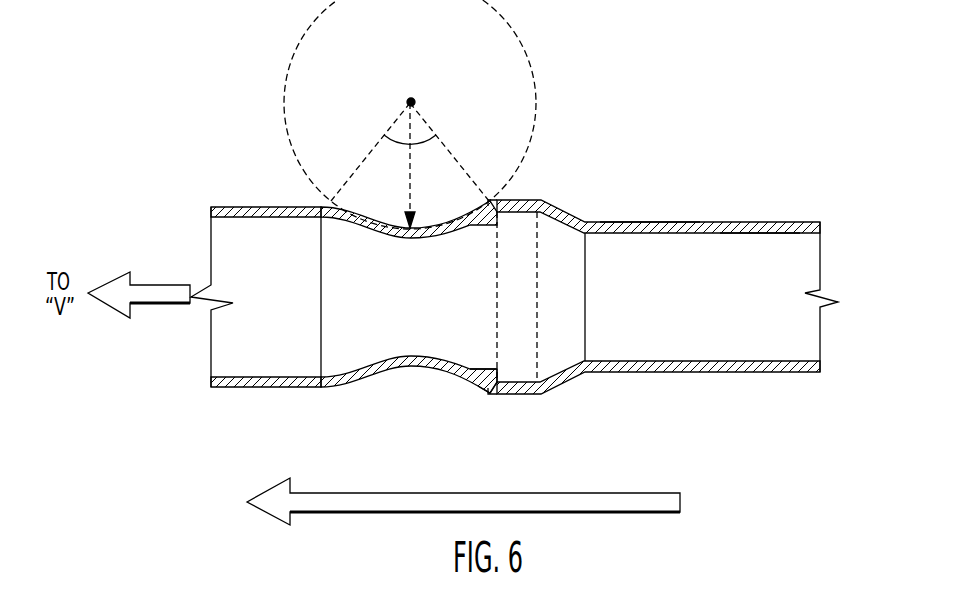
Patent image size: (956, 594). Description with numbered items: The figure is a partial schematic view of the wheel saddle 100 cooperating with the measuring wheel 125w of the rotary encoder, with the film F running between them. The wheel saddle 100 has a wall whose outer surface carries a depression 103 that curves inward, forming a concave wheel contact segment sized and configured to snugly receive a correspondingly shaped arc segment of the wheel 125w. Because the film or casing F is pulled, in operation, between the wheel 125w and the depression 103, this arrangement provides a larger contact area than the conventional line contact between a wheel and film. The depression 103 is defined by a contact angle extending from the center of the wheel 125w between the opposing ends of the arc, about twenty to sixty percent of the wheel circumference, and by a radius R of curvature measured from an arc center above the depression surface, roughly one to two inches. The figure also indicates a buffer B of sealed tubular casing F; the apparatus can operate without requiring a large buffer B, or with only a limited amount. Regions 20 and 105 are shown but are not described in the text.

The pipe 20 is at (650, 280).
The wheel saddle 100 is at (409, 269).
The depression 103 is at (447, 220).
The pipe end 105 is at (488, 377).
The wheel 125w is at (281, 88).
The film F is at (637, 222).
The buffer B is at (752, 225).
The radius of curvature R is at (425, 165).